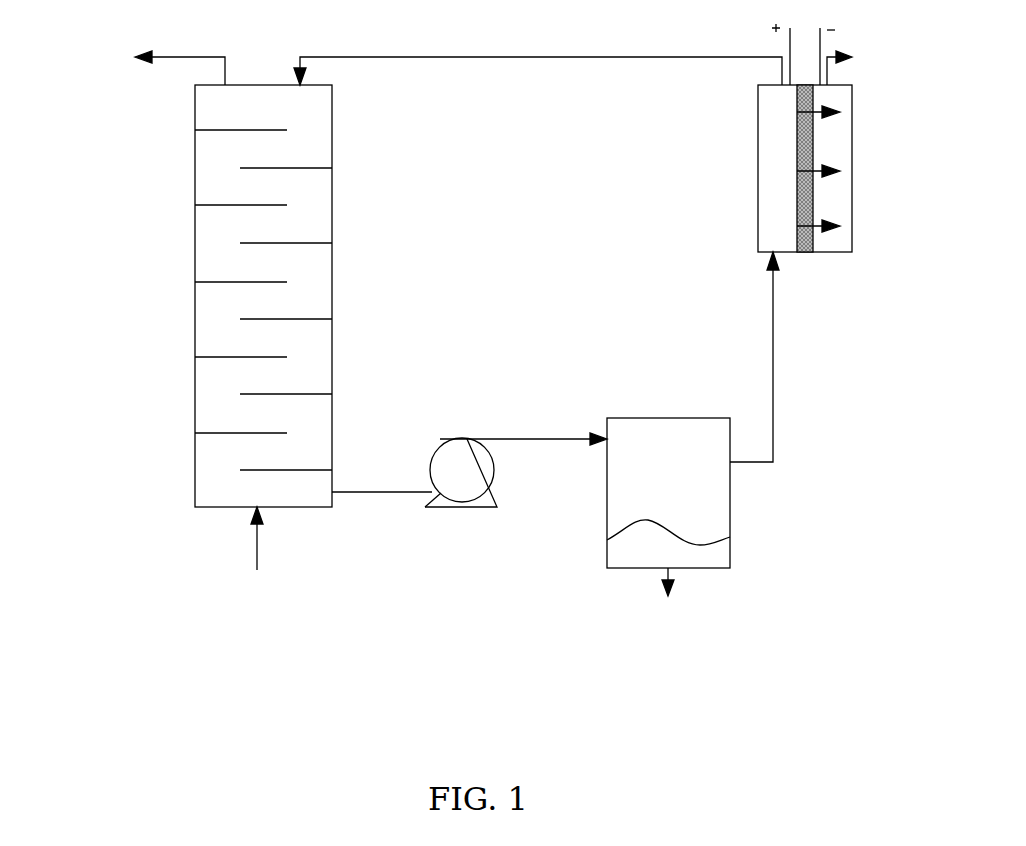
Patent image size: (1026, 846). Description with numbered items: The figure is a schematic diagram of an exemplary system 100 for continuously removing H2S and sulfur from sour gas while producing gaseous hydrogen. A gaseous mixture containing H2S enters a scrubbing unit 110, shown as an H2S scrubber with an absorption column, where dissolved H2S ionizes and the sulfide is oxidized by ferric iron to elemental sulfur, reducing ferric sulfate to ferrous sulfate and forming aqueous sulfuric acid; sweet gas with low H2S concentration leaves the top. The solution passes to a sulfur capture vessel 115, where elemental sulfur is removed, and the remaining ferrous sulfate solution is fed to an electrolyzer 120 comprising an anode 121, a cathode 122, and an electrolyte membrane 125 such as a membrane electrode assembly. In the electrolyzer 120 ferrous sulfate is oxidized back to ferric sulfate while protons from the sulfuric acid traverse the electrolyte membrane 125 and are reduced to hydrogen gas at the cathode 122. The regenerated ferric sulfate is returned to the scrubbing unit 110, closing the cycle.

The system 100 is at (177, 657).
The scrubbing unit 110 is at (332, 230).
The sulfur capture vessel 115 is at (730, 517).
The electrolyzer 120 is at (764, 172).
The anode 121 is at (768, 102).
The cathode 122 is at (842, 102).
The electrolyte membrane 125 is at (805, 252).